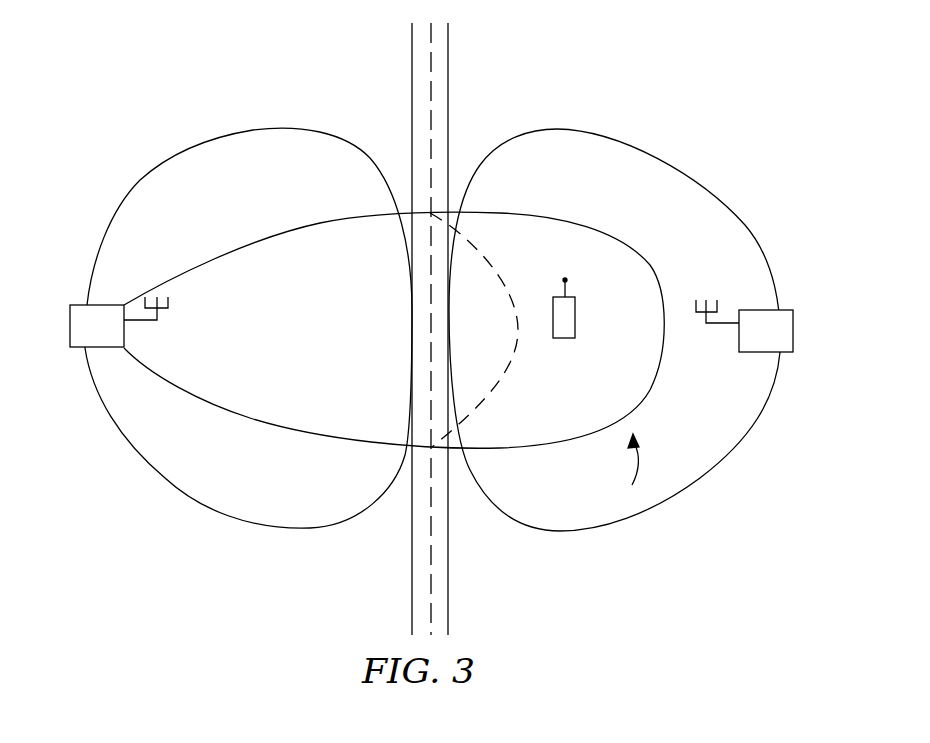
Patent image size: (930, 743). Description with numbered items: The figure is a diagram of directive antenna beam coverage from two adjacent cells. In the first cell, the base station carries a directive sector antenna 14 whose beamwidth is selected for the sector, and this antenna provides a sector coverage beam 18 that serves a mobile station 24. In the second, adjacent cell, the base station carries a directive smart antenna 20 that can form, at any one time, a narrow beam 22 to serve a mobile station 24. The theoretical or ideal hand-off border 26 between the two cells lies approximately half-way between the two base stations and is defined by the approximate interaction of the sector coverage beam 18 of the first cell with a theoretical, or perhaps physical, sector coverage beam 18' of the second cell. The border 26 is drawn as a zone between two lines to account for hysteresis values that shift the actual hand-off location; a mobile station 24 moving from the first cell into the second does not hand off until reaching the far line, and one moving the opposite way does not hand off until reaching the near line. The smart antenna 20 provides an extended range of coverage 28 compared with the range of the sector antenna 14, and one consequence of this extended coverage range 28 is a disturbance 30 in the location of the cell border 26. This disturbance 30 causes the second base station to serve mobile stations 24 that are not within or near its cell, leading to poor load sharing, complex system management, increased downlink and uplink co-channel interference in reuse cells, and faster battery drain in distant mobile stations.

The directive (sector) antenna 14 is at (697, 305).
The sector coverage beam 18 is at (614, 342).
The sector coverage beam 18' is at (248, 354).
The directive (smart) antenna 20 is at (163, 310).
The narrow beam 22 is at (283, 430).
The mobile station 24 is at (577, 318).
The hand-off border 26 is at (431, 628).
The extended range of coverage 28 is at (622, 472).
The disturbance 30 is at (505, 378).